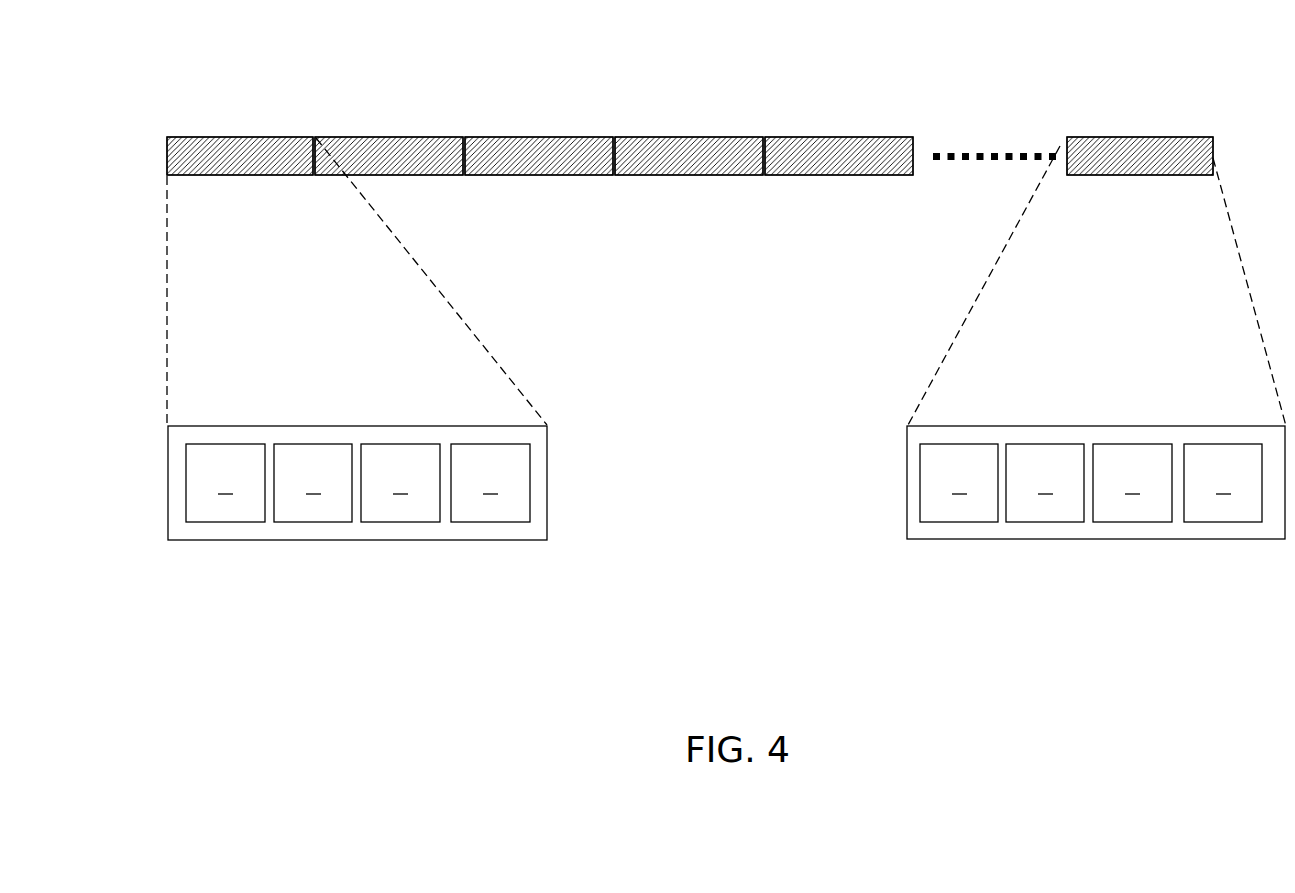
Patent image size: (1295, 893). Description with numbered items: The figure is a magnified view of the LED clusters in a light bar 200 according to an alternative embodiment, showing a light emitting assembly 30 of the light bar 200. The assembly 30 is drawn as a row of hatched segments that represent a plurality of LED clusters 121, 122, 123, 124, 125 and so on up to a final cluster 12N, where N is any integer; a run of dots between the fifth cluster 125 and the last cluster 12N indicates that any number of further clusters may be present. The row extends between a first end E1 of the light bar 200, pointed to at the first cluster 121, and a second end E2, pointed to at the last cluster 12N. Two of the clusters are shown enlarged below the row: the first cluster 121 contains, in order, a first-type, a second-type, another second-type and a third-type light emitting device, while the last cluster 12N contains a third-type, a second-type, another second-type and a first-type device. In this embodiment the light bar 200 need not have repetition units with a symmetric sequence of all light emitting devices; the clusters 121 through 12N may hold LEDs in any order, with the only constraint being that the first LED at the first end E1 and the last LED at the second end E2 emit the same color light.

The LED assembly 30 is at (726, 349).
The light bar 200 is at (1208, 118).
The LED cluster 121 is at (219, 166).
The LED cluster 122 is at (366, 166).
The LED cluster 123 is at (509, 166).
The LED cluster 124 is at (667, 166).
The LED cluster 125 is at (819, 166).
The LED cluster 12N is at (1119, 166).
The first end E1 is at (167, 155).
The second end E2 is at (1213, 153).